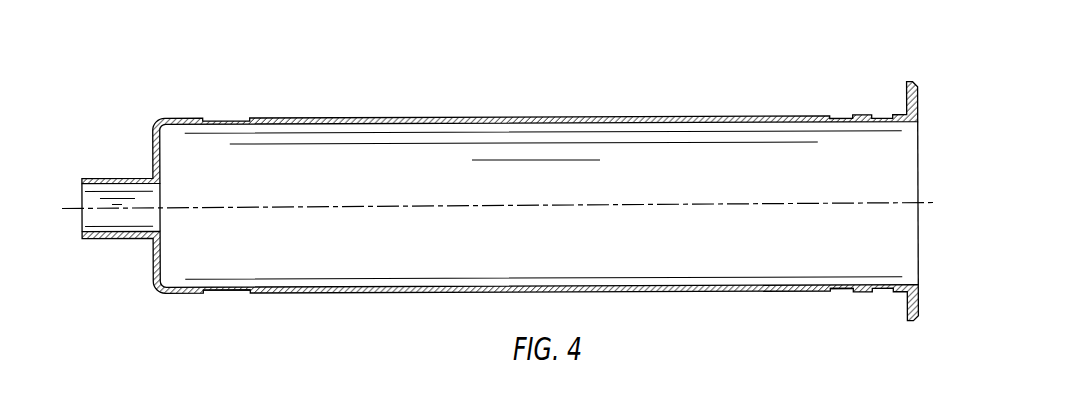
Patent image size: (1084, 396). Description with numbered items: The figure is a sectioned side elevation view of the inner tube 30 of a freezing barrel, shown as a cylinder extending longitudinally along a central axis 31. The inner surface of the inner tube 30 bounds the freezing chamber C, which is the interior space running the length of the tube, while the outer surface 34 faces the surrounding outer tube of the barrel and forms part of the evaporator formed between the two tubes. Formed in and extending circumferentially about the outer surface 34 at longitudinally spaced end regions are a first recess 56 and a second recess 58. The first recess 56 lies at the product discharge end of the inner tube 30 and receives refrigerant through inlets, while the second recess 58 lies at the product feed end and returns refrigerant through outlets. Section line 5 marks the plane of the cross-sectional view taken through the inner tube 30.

The inner tube 30 is at (500, 203).
The outer surface 34 is at (447, 117).
The central axis 31 is at (547, 205).
The second recess 58 is at (230, 293).
The first recess 56 is at (840, 292).
The section line 5- 5 is at (835, 92).
The freezing chamber C is at (505, 190).